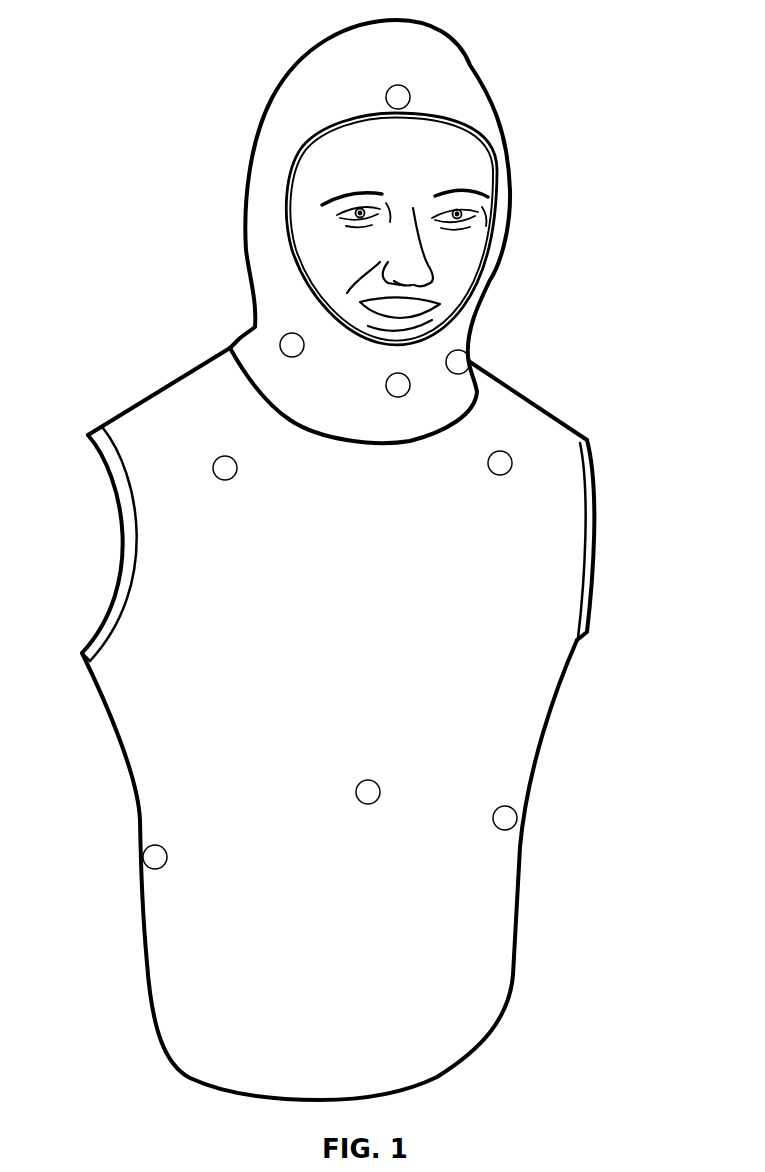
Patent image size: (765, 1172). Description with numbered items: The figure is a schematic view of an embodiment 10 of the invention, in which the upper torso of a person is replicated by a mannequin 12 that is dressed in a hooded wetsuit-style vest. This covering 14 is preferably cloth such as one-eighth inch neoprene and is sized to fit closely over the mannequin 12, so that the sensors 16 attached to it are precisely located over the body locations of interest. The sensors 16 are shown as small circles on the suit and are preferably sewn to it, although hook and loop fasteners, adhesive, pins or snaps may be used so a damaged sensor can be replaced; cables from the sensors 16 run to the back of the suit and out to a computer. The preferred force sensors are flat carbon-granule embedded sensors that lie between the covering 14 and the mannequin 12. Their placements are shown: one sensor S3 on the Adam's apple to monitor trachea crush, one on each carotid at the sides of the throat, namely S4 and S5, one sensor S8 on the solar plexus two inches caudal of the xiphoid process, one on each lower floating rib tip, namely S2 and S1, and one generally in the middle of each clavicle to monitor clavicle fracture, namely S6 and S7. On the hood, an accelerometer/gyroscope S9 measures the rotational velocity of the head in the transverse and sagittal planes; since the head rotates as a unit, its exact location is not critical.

The embodiment 10 is at (572, 232).
The mannequin 12 is at (460, 170).
The covering 14 is at (475, 107).
The sensors 16 is at (467, 358).
The sensor on lower floating rib tip S1 is at (511, 814).
The sensor on lower floating rib tip S2 is at (150, 858).
The sensor on Adam's apple S3 is at (390, 385).
The sensor on carotid S4 is at (463, 358).
The sensor on carotid S5 is at (284, 346).
The sensor on clavicle S6 is at (502, 455).
The sensor on clavicle S7 is at (218, 465).
The sensor on solar plexus S8 is at (376, 788).
The accelerometer/gyroscope S9 is at (405, 95).